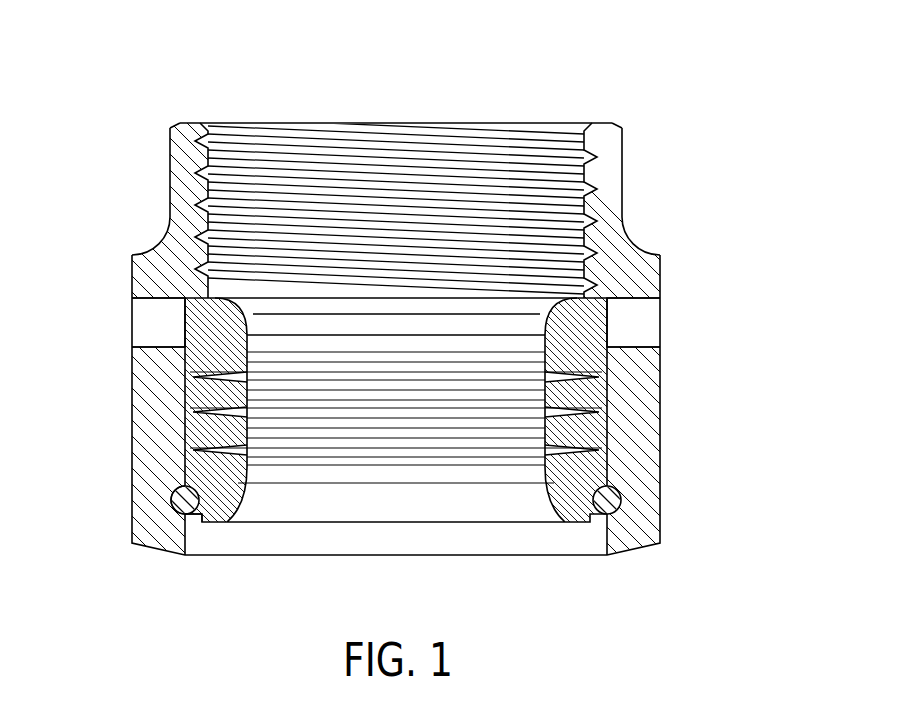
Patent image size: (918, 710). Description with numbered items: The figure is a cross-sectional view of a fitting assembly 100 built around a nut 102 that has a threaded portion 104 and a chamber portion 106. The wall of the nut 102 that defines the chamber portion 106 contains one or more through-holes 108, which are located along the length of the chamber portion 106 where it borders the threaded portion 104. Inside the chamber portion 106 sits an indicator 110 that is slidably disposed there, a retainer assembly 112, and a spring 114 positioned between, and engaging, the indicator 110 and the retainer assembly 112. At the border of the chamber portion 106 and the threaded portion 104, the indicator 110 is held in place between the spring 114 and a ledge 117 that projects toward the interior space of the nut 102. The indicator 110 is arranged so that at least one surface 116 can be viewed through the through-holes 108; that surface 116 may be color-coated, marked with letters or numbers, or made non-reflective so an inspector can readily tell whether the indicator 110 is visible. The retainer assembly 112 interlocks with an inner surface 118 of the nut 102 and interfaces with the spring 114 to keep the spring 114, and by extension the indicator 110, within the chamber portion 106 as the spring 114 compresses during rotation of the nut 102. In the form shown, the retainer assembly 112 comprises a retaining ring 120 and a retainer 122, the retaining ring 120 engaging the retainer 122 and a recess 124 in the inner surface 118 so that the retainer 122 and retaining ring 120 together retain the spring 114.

The fitting assembly 100 is at (723, 102).
The nut 102 is at (187, 215).
The threaded portion 104 is at (697, 120).
The chamber portion 106 is at (697, 295).
The through-holes 108 is at (143, 307).
The indicator 110 is at (185, 332).
The retainer assembly 112 is at (97, 460).
The spring 114 is at (185, 400).
The surface 116 is at (187, 327).
The ledge 117 is at (130, 257).
The inner surface 118 is at (185, 448).
The retaining ring 120 is at (187, 514).
The retainer 122 is at (575, 520).
The recess 124 is at (170, 505).